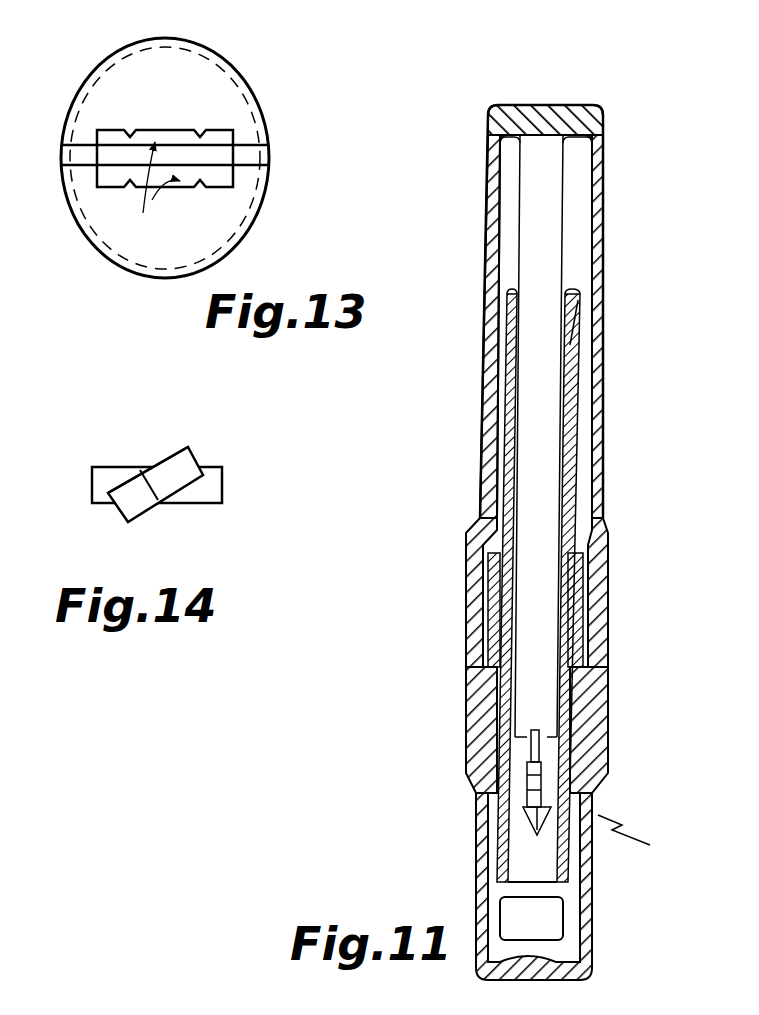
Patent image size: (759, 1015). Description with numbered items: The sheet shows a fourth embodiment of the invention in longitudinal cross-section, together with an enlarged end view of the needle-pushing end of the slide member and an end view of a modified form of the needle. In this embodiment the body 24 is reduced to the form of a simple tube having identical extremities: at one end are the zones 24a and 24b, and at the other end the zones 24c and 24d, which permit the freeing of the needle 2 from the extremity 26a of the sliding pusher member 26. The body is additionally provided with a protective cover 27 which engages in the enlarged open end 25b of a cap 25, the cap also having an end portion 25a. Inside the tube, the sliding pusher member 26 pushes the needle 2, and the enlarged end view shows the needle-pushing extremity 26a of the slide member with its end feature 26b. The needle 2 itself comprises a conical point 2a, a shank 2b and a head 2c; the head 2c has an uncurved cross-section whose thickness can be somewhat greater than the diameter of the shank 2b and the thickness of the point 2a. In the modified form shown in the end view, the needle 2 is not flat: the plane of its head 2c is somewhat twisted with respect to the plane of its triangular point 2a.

In FIG. 14, the needle 2 is at (242, 478).
In FIG. 11, the needle 2 is at (634, 840).
In FIG. 14, the conical point 2a is at (133, 504).
In FIG. 11, the conical point 2a is at (533, 833).
In FIG. 14, the shank 2b is at (182, 504).
In FIG. 11, the shank 2b is at (528, 802).
In FIG. 14, the head 2c is at (115, 472).
In FIG. 11, the head 2c is at (556, 797).
In FIG. 11, the body 24 is at (568, 413).
In FIG. 11, the zone 24a is at (530, 316).
In FIG. 11, the zone 24b is at (530, 342).
In FIG. 11, the zone 24c is at (540, 889).
In FIG. 11, the zone 24d is at (547, 918).
In FIG. 11, the cap 25 is at (488, 438).
In FIG. 11, the cap end 25a is at (548, 106).
In FIG. 11, the enlarged open end 25b is at (478, 587).
In FIG. 13, the sliding pusher member 26 is at (228, 58).
In FIG. 11, the sliding pusher member 26 is at (540, 482).
In FIG. 13, the extremity 26a is at (137, 72).
In FIG. 11, the extremity 26a is at (510, 752).
In FIG. 13, the pusher member end portion 26b is at (155, 198).
In FIG. 11, the pusher member end portion 26b is at (548, 752).
In FIG. 11, the protective cover 27 is at (600, 687).